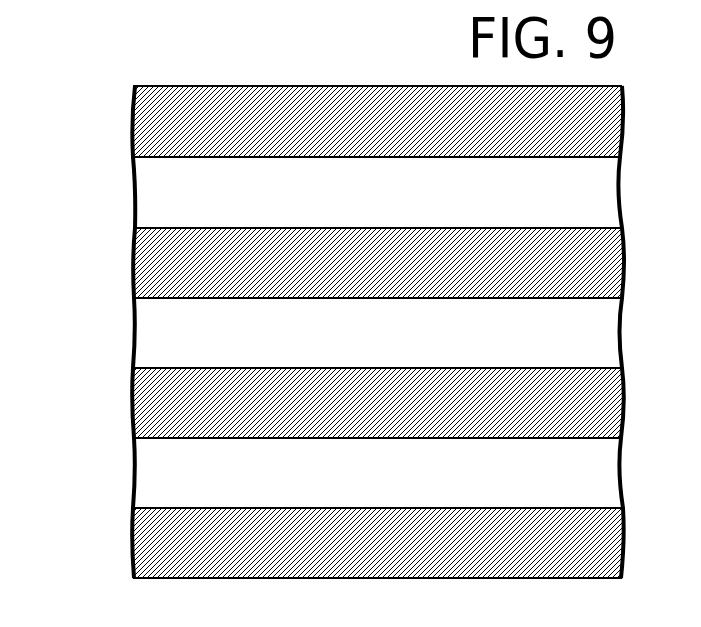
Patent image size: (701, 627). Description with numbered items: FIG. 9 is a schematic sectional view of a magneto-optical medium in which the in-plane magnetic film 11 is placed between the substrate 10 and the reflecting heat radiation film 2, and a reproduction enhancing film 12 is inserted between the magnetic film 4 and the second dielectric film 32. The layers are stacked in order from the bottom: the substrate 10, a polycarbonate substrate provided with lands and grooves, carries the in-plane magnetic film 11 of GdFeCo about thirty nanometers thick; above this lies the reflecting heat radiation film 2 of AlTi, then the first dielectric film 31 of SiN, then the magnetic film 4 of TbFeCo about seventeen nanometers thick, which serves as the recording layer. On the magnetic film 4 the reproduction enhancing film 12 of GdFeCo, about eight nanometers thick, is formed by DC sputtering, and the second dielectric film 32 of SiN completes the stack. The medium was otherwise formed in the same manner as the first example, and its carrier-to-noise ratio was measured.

The second dielectric film 32 is at (158, 132).
The reproduction enhancing film 12 is at (157, 200).
The magnetic film 4 is at (158, 266).
The first dielectric film 31 is at (157, 342).
The reflecting heat radiation film 2 is at (153, 402).
The in-plane magnetic film 11 is at (153, 475).
The substrate 10 is at (153, 547).